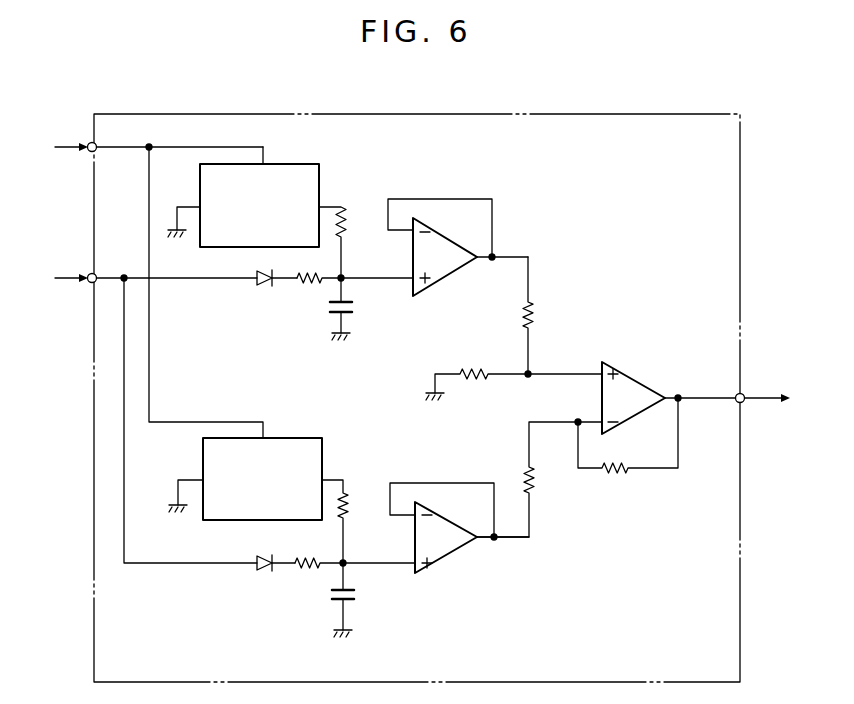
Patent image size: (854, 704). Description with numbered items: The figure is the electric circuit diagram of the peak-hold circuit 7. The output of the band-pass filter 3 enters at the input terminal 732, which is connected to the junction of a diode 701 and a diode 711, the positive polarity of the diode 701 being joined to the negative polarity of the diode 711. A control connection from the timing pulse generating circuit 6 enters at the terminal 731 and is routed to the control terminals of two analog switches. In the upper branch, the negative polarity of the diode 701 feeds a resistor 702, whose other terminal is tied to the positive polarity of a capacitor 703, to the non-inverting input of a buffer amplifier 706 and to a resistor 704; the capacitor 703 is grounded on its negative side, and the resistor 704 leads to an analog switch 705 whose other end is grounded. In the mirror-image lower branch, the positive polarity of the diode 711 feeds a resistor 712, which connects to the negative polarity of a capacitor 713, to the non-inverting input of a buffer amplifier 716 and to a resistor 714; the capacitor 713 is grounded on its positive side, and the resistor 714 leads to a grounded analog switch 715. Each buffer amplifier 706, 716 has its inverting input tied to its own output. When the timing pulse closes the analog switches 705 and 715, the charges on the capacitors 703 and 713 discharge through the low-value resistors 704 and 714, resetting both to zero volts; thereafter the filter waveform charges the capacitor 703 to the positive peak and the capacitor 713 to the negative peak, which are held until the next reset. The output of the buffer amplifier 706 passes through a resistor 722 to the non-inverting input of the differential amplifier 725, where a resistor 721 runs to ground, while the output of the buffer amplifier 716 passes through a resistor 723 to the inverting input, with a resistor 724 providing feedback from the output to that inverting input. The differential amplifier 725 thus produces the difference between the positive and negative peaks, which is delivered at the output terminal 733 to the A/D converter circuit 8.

The peak-hold circuit 7 is at (627, 108).
The timing pulse generating circuit 6 is at (60, 147).
The band-pass filter 3 is at (60, 278).
The A/D converter circuit 8 is at (778, 398).
The diode 701 is at (262, 286).
The resistor 702 is at (303, 286).
The capacitor 703 is at (352, 307).
The resistor 704 is at (346, 222).
The analog switch 705 is at (300, 164).
The buffer amplifier 706 is at (452, 276).
The diode 711 is at (262, 571).
The resistor 712 is at (305, 571).
The capacitor 713 is at (354, 595).
The resistor 714 is at (348, 506).
The analog switch 715 is at (322, 462).
The buffer amplifier 716 is at (455, 556).
The resistor 721 is at (474, 380).
The resistor 722 is at (533, 314).
The resistor 723 is at (534, 478).
The resistor 724 is at (620, 474).
The differential amplifier 725 is at (622, 375).
The input terminal 731 is at (96, 144).
The input terminal 732 is at (96, 275).
The output terminal 733 is at (744, 394).